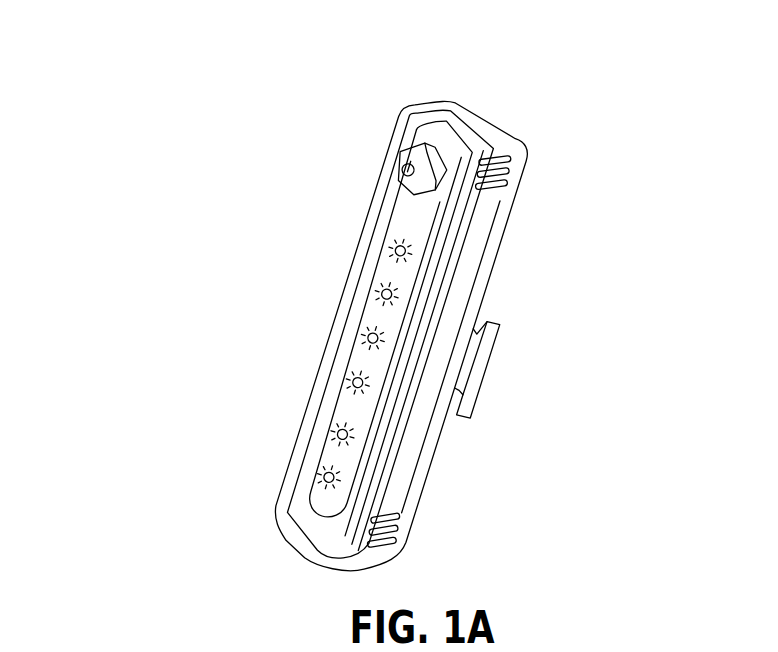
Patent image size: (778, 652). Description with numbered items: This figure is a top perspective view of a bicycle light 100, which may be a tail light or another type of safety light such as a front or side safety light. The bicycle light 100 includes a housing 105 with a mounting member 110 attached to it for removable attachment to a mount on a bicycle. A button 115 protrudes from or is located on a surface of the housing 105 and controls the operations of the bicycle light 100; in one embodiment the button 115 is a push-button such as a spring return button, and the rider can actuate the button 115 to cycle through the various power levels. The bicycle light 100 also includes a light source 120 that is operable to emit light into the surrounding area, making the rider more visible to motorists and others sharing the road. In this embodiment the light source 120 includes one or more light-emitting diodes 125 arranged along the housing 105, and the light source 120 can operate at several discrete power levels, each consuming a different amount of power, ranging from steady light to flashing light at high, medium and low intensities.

The bicycle light 100 is at (232, 116).
The housing 105 is at (310, 393).
The mounting member 110 is at (477, 398).
The button 115 is at (404, 151).
The light source 120 is at (412, 240).
The light-emitting diodes (LEDs) 125 is at (398, 247).